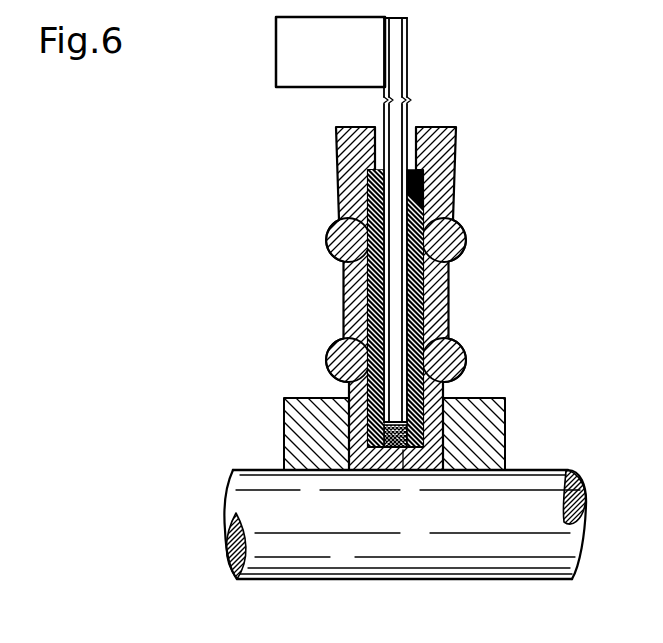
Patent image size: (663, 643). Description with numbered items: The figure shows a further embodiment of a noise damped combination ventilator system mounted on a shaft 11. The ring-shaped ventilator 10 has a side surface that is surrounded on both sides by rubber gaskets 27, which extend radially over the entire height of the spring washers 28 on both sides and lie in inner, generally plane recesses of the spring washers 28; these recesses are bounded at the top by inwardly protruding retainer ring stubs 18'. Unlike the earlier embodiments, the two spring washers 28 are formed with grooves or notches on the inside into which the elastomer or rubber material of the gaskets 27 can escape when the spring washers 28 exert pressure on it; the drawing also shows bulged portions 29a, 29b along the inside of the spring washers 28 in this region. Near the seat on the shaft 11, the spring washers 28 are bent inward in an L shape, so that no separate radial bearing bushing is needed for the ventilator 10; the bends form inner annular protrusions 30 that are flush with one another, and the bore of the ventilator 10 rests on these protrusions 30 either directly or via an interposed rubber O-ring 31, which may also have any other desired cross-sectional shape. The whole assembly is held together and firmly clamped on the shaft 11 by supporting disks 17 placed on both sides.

The ventilator 10 is at (410, 108).
The shaft 11 is at (535, 483).
The supporting disks 17 is at (320, 410).
The retainer ring stubs 18' is at (383, 134).
The rubber gaskets 27 is at (370, 176).
The spring washers 28 is at (355, 142).
The upper detent ball 29a is at (362, 228).
The lower detent ball 29b is at (366, 350).
The inner annular protrusions 30 is at (376, 458).
The rubber O-ring 31 is at (444, 398).